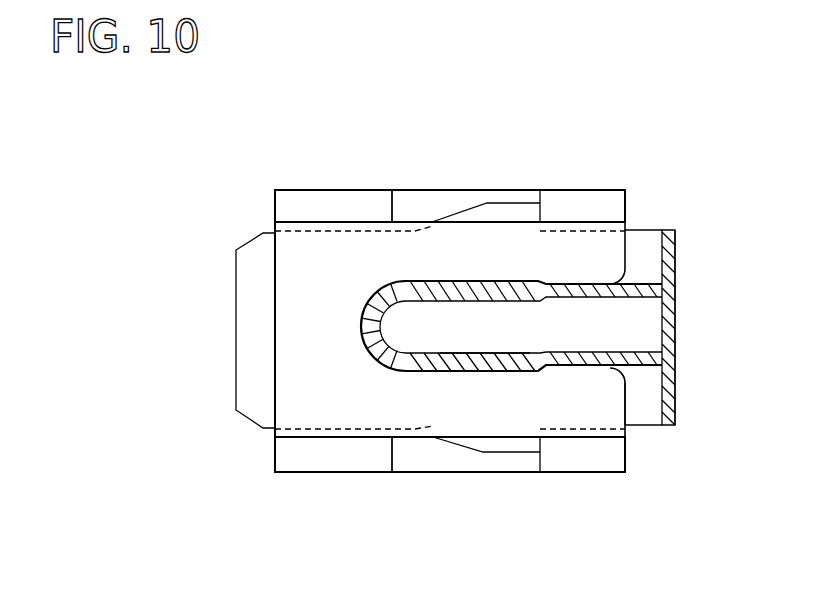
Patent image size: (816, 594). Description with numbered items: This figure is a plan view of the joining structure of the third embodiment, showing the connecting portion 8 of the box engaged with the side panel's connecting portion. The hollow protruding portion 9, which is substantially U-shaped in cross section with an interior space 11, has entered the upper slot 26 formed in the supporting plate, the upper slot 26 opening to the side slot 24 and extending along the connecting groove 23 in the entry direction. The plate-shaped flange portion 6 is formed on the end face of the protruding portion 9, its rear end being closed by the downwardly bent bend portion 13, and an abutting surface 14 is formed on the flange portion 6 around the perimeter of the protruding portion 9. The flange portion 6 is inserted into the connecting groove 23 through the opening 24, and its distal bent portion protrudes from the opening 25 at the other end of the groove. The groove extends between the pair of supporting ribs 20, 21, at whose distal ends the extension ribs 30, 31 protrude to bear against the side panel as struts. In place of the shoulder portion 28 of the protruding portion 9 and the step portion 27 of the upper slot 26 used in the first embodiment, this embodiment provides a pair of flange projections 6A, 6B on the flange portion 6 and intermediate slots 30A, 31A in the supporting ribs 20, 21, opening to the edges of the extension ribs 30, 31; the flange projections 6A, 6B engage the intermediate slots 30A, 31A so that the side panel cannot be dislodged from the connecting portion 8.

The plate-shaped flange portion 6 is at (232, 273).
The flange projection 6A is at (503, 208).
The flange projection 6B is at (503, 445).
The connecting portion 8 is at (593, 183).
The protruding portion 9 is at (468, 363).
The interior space 11 is at (478, 313).
The bend portion 13 is at (678, 306).
The abutting surface 14 is at (351, 268).
The supporting rib 20 is at (335, 188).
The supporting rib 21 is at (297, 474).
The connecting groove 23 is at (315, 231).
The opening (side slot) 24 is at (631, 392).
The opening 25 is at (270, 384).
The upper slot 26 is at (447, 289).
The step portion 27 is at (550, 372).
The shoulder portion 28 is at (502, 276).
The extension rib 30 is at (295, 203).
The intermediate slot 30A is at (393, 205).
The extension rib 31 is at (333, 460).
The intermediate slot 31A is at (396, 452).